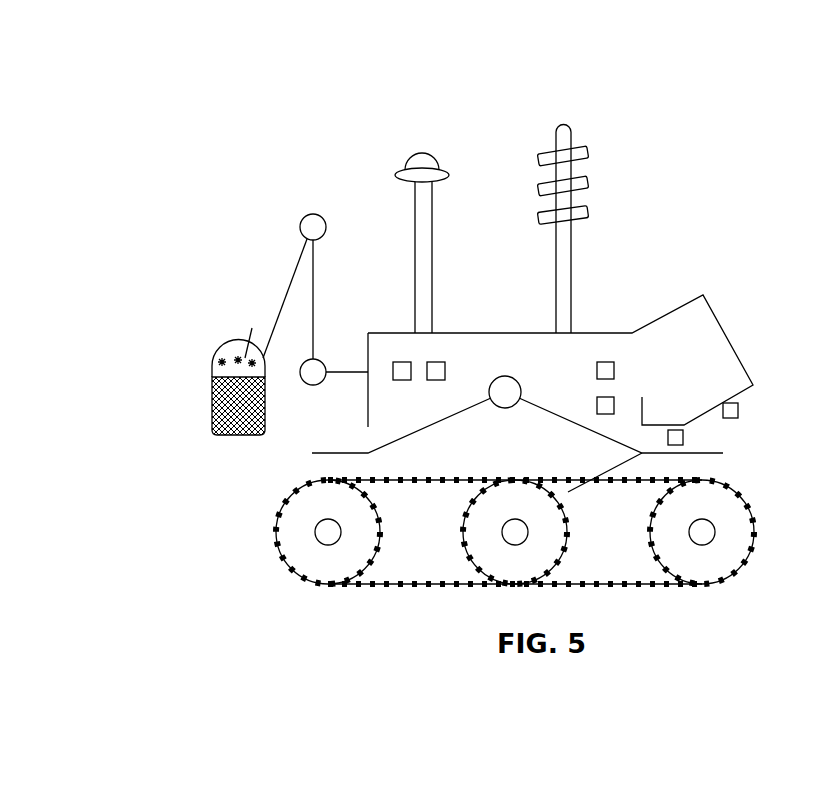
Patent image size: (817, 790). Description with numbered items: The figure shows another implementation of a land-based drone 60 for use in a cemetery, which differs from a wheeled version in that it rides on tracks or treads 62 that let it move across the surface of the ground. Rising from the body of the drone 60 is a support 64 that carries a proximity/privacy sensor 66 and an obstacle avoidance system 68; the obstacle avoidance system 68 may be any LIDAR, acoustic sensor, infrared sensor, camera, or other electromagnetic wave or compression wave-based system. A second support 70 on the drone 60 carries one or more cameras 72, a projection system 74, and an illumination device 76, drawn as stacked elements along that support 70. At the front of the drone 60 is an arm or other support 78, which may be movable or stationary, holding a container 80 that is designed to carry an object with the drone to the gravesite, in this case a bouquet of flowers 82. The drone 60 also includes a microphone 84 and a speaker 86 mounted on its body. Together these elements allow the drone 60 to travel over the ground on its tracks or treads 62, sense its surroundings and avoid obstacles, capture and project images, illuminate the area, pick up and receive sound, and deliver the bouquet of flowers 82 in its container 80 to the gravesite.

The land-based drone 60 is at (630, 58).
The tracks or treads 62 is at (436, 597).
The support 64 is at (415, 267).
The proximity/privacy sensor 66 is at (449, 178).
The obstacle avoidance system 68 is at (409, 155).
The support 70 is at (571, 267).
The camera 72 is at (588, 152).
The projection system 74 is at (588, 183).
The illumination device 76 is at (588, 212).
The arm or other support 78 is at (287, 298).
The container 80 is at (212, 420).
The bouquet of flowers 82 is at (212, 372).
The microphone 84 is at (739, 412).
The speaker 86 is at (684, 437).